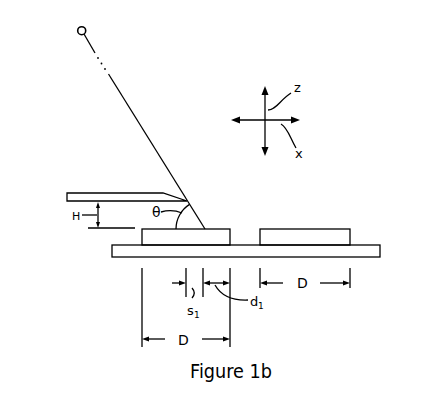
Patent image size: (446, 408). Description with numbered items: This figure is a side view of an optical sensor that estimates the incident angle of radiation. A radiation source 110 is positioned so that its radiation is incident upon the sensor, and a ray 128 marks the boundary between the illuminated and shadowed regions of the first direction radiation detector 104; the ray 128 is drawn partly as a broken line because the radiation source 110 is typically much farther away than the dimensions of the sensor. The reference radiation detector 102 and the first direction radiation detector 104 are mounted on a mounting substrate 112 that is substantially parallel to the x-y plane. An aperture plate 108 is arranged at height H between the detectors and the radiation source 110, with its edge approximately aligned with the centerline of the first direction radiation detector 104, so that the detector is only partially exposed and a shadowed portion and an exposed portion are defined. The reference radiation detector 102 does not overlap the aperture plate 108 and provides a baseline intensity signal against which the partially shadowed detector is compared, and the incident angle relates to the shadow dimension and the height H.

The reference radiation detector 102 is at (310, 237).
The first direction radiation detector 104 is at (142, 240).
The aperture plate 108 is at (107, 197).
The radiation source 110 is at (87, 29).
The mounting substrate 112 is at (363, 253).
The ray 128 is at (127, 103).